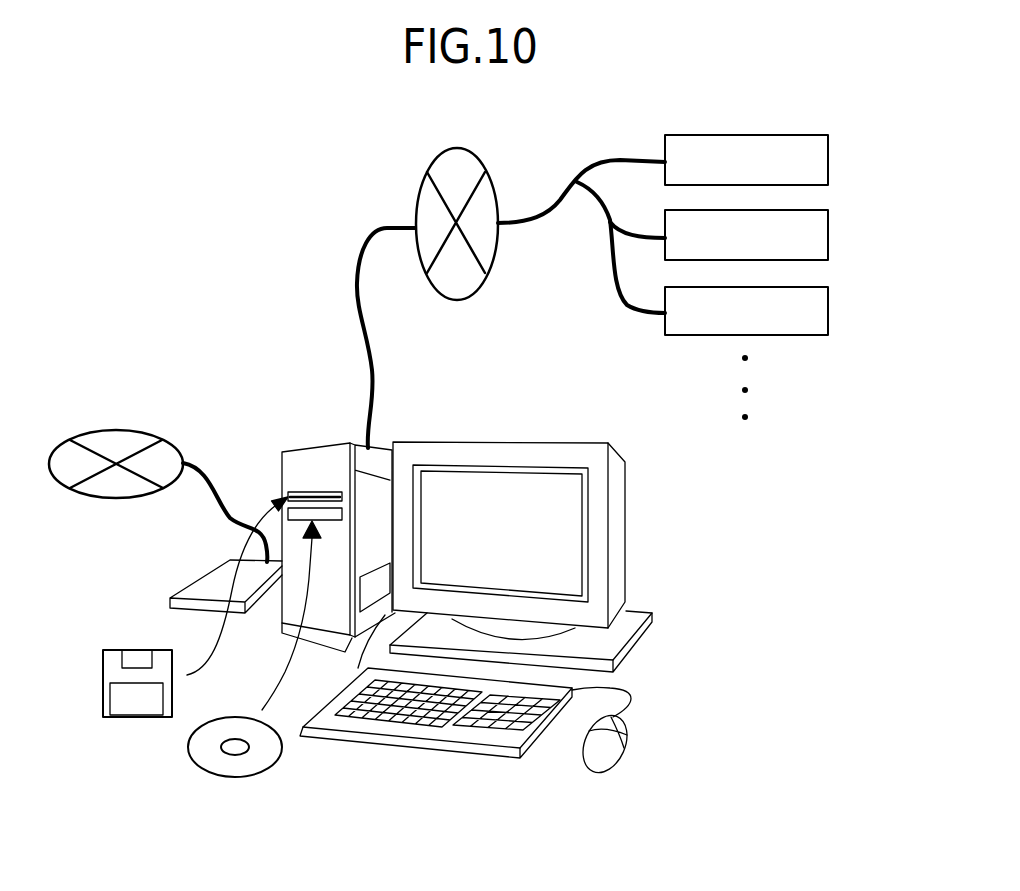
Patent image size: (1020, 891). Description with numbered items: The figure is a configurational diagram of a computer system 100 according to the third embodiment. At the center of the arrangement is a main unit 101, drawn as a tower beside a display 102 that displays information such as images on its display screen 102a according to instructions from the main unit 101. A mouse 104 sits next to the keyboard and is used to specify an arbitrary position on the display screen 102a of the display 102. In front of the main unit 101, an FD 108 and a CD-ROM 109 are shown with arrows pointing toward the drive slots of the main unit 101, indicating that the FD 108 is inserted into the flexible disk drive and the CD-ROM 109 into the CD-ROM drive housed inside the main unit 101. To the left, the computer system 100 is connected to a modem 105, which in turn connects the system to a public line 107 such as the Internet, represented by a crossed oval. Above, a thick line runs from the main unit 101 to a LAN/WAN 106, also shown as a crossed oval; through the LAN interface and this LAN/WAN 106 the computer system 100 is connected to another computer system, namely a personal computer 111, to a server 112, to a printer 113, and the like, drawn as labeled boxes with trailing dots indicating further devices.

The computer system 100 is at (247, 421).
The main unit 101 is at (312, 472).
The display 102 is at (622, 497).
The display screen 102a is at (495, 490).
The mouse 104 is at (603, 765).
The modem 105 is at (207, 588).
The LAN/WAN 106 is at (415, 202).
The public line 107 is at (102, 492).
The FD 108 is at (135, 703).
The CD-ROM 109 is at (233, 768).
The personal computer 111 is at (828, 155).
The server 112 is at (828, 231).
The printer 113 is at (828, 306).